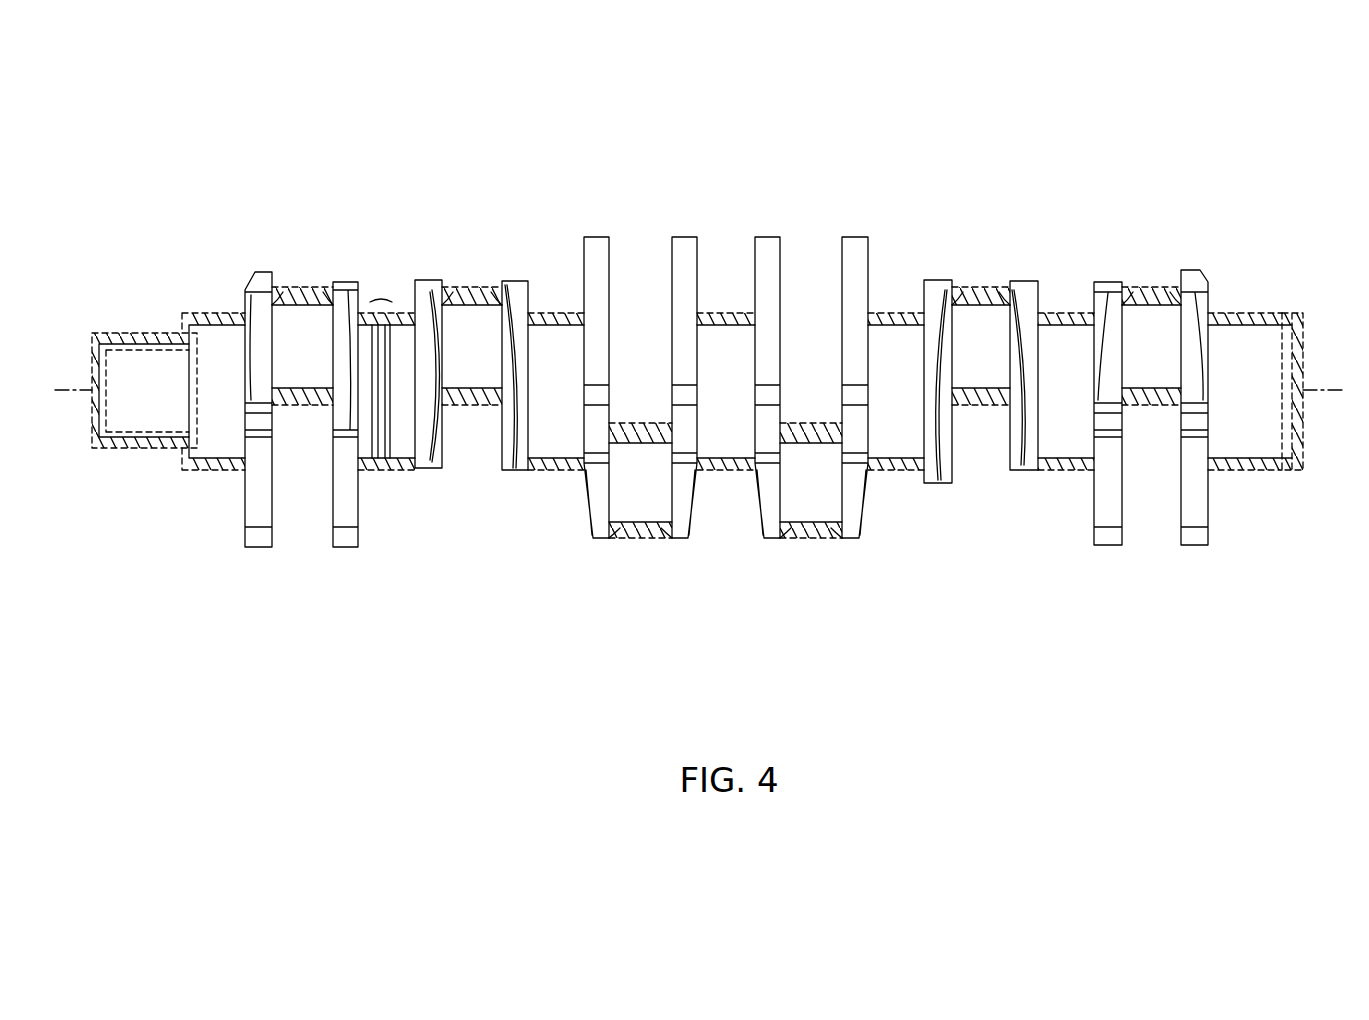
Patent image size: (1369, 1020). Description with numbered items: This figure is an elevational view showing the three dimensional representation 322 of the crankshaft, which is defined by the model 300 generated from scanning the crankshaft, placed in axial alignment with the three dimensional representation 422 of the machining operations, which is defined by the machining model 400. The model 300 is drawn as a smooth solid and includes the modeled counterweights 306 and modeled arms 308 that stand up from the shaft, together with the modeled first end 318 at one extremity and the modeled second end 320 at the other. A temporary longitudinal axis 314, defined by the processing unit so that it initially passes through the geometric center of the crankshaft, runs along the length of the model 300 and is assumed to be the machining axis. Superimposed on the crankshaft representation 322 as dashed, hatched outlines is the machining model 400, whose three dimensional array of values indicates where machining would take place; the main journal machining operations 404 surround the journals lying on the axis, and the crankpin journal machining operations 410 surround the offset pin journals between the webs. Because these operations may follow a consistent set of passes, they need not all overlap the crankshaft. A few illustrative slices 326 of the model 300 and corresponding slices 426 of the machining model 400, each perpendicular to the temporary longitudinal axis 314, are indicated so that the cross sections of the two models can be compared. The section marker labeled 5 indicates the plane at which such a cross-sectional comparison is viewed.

The model 300 is at (740, 541).
The three dimensional representation of the crankshaft 322 is at (1082, 742).
The modeled counterweights 306 is at (860, 237).
The modeled arms 308 is at (515, 284).
The temporary longitudinal axis 314 is at (60, 388).
The modeled first end 318 is at (92, 412).
The modeled second end 320 is at (1298, 437).
The slices of the model 326 is at (415, 271).
The slices of the machining model 426 is at (383, 298).
The machining model 400 is at (1283, 465).
The three dimensional representation of the machining operations 422 is at (1272, 507).
The main journal machining operations 404 is at (897, 470).
The crankpin journal machining operations 410 is at (815, 540).
The section line 5 is at (653, 253).